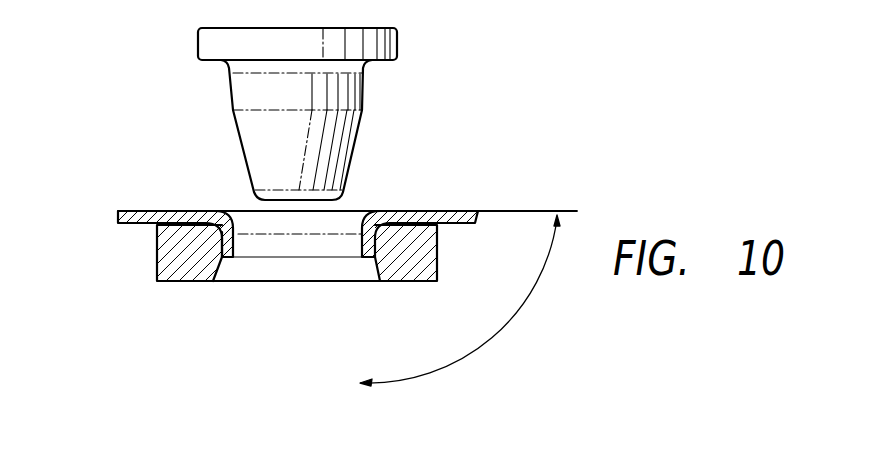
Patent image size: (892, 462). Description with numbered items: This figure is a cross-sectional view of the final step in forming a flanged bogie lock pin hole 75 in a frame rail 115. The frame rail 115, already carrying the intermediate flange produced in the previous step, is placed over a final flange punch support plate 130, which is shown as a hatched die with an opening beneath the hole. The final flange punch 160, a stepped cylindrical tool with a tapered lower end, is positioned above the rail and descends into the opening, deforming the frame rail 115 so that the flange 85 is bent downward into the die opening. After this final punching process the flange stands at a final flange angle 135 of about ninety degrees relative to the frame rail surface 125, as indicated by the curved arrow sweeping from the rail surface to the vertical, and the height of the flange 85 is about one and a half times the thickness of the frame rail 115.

The final flange punch 160 is at (338, 138).
The frame rail 115 is at (191, 211).
The frame rail surface 125 is at (407, 211).
The flange 85 is at (218, 244).
The final flange punch support plate 130 is at (198, 268).
The flanged bogie lock pin hole 75 is at (275, 243).
The final flange angle 135 is at (515, 316).